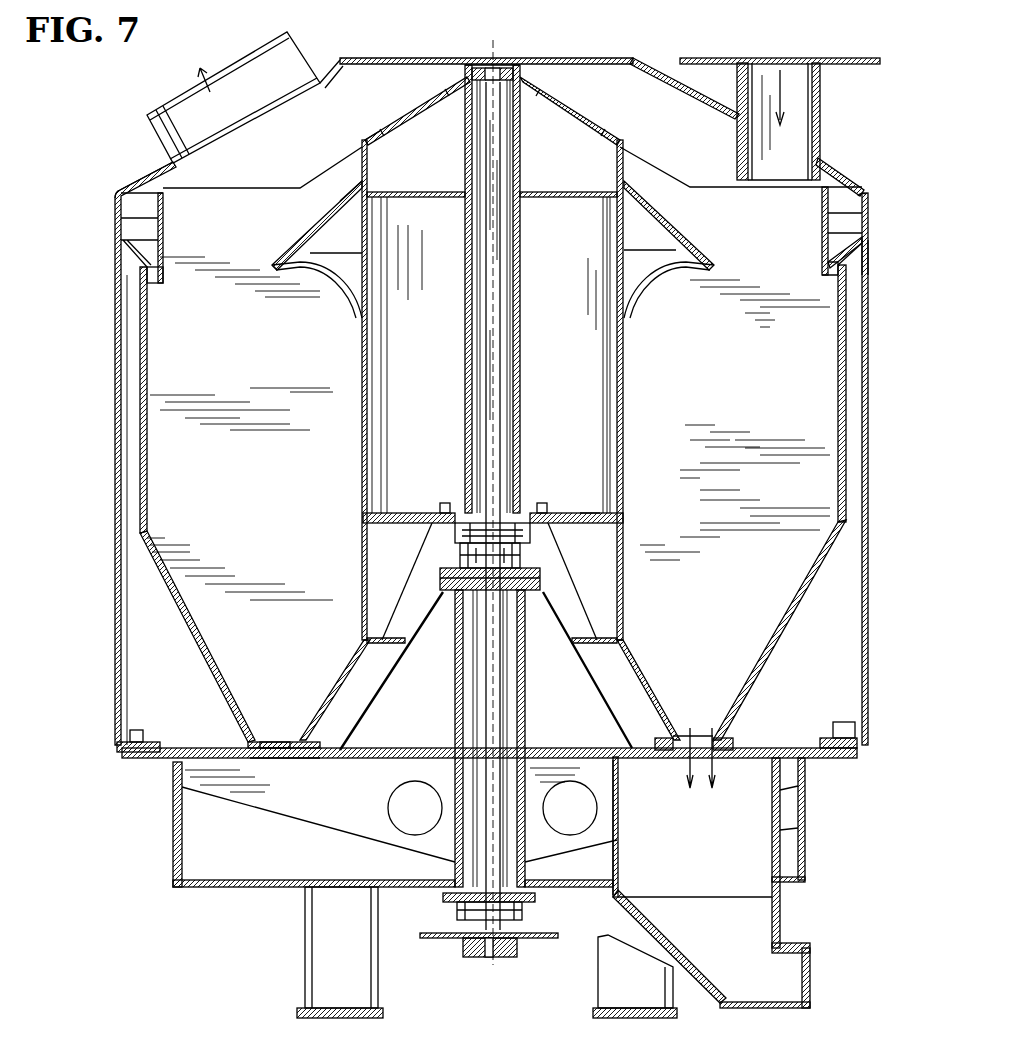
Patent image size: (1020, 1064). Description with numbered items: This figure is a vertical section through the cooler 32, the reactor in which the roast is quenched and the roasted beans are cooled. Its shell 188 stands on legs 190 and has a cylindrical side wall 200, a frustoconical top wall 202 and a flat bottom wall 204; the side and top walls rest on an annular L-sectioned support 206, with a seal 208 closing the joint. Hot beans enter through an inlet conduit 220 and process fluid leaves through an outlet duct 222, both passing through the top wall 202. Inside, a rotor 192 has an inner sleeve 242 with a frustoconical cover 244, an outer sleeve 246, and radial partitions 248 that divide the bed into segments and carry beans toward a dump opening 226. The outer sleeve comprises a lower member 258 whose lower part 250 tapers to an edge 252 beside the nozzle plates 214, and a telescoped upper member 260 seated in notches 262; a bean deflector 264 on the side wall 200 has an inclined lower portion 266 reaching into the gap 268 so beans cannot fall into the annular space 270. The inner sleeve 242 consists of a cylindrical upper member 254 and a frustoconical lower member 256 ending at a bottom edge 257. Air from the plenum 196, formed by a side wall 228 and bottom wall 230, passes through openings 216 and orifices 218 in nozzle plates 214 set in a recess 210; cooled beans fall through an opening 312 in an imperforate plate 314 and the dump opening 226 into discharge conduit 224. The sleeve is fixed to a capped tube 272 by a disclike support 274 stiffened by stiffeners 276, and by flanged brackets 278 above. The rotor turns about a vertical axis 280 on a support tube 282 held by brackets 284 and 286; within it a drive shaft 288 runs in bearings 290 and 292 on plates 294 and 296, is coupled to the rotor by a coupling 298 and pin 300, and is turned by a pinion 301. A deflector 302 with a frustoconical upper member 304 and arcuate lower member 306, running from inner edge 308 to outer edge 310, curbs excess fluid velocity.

The cooler 32 is at (85, 230).
The shell 188 is at (100, 364).
The legs 190 is at (322, 976).
The rotor 192 is at (125, 404).
The plenum 196 is at (829, 814).
The side wall 200 is at (115, 505).
The top wall 202 is at (430, 60).
The bottom wall 204 is at (835, 760).
The support 206 is at (145, 740).
The seal 208 is at (122, 740).
The recess 210 is at (745, 750).
The nozzle plates 214 is at (248, 745).
The openings 216 is at (290, 762).
The orifices 218 is at (272, 742).
The inlet conduit 220 is at (740, 80).
The outlet duct 222 is at (292, 38).
The discharge conduit 224 is at (780, 830).
The dump opening 226 is at (708, 762).
The side wall 228 is at (805, 850).
The bottom wall 230 is at (596, 885).
The inner sleeve 242 is at (645, 355).
The cover 244 is at (366, 136).
The outer sleeve 246 is at (865, 320).
The partitions 248 is at (265, 188).
The lower part 250 is at (810, 570).
The edge 252 is at (708, 752).
The upper member 254 is at (625, 440).
The lower member 256 is at (636, 655).
The bottom edge 257 is at (675, 760).
The lower member 258 is at (840, 405).
The upper member 260 is at (822, 228).
The notches 262 is at (822, 255).
The bean deflector 264 is at (836, 199).
The lower portion 266 is at (865, 258).
The gap 268 is at (852, 200).
The annular space 270 is at (838, 305).
The tube 272 is at (466, 302).
The support 274 is at (583, 512).
The stiffeners 276 is at (378, 540).
The brackets 278 is at (410, 155).
The vertical axis 280 is at (496, 312).
The support tube 282 is at (522, 680).
The brackets 284 is at (390, 723).
The brackets 286 is at (325, 813).
The drive shaft 288 is at (476, 660).
The bearing 290 is at (522, 558).
The bearing 292 is at (458, 918).
The plate 294 is at (440, 588).
The plate 296 is at (445, 897).
The coupling 298 is at (432, 535).
The pin 300 is at (490, 530).
The pinion 301 is at (545, 940).
The deflector 302 is at (300, 224).
The upper member 304 is at (343, 193).
The lower member 306 is at (292, 278).
The inner edge 308 is at (360, 312).
The outer edge 310 is at (272, 264).
The opening 312 is at (706, 722).
The plate 314 is at (665, 740).